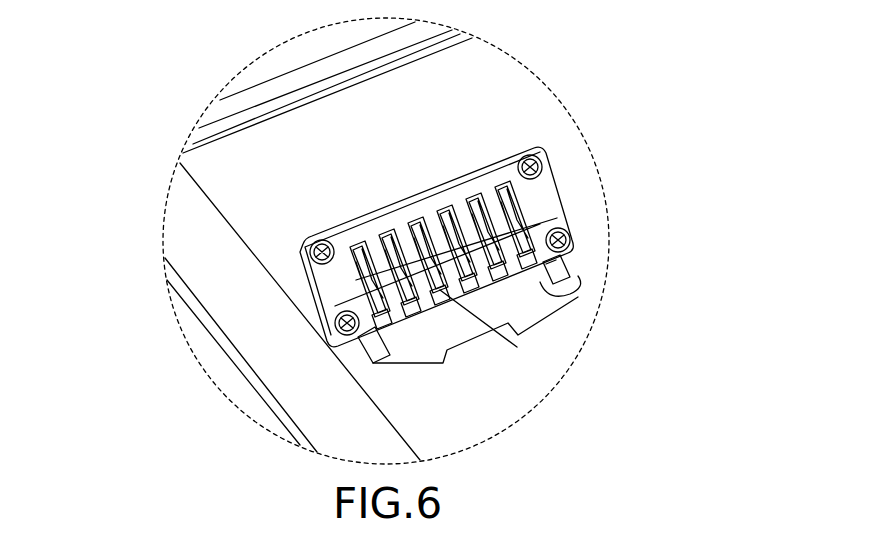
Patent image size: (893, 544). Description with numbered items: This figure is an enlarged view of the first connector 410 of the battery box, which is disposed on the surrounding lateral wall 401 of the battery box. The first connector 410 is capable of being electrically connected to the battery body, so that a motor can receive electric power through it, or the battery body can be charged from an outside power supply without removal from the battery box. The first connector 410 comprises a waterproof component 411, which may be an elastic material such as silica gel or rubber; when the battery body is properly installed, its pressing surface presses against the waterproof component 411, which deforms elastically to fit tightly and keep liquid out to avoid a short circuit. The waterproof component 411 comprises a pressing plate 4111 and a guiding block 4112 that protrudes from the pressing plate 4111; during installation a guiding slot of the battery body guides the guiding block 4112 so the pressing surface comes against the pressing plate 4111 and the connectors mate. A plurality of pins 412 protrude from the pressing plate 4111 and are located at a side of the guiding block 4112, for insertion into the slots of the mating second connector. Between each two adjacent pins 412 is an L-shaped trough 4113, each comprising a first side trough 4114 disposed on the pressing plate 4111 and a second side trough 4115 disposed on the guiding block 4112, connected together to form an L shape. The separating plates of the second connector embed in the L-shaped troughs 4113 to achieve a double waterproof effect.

The surrounding lateral wall 401 is at (533, 110).
The first connector 410 is at (547, 153).
The waterproof component 411 is at (541, 269).
The pins 412 is at (365, 280).
The pressing plate 4111 is at (557, 218).
The guiding block 4112 is at (563, 282).
The L-shaped troughs 4113 is at (517, 347).
The first side trough 4114 is at (493, 217).
The second side trough 4115 is at (552, 295).